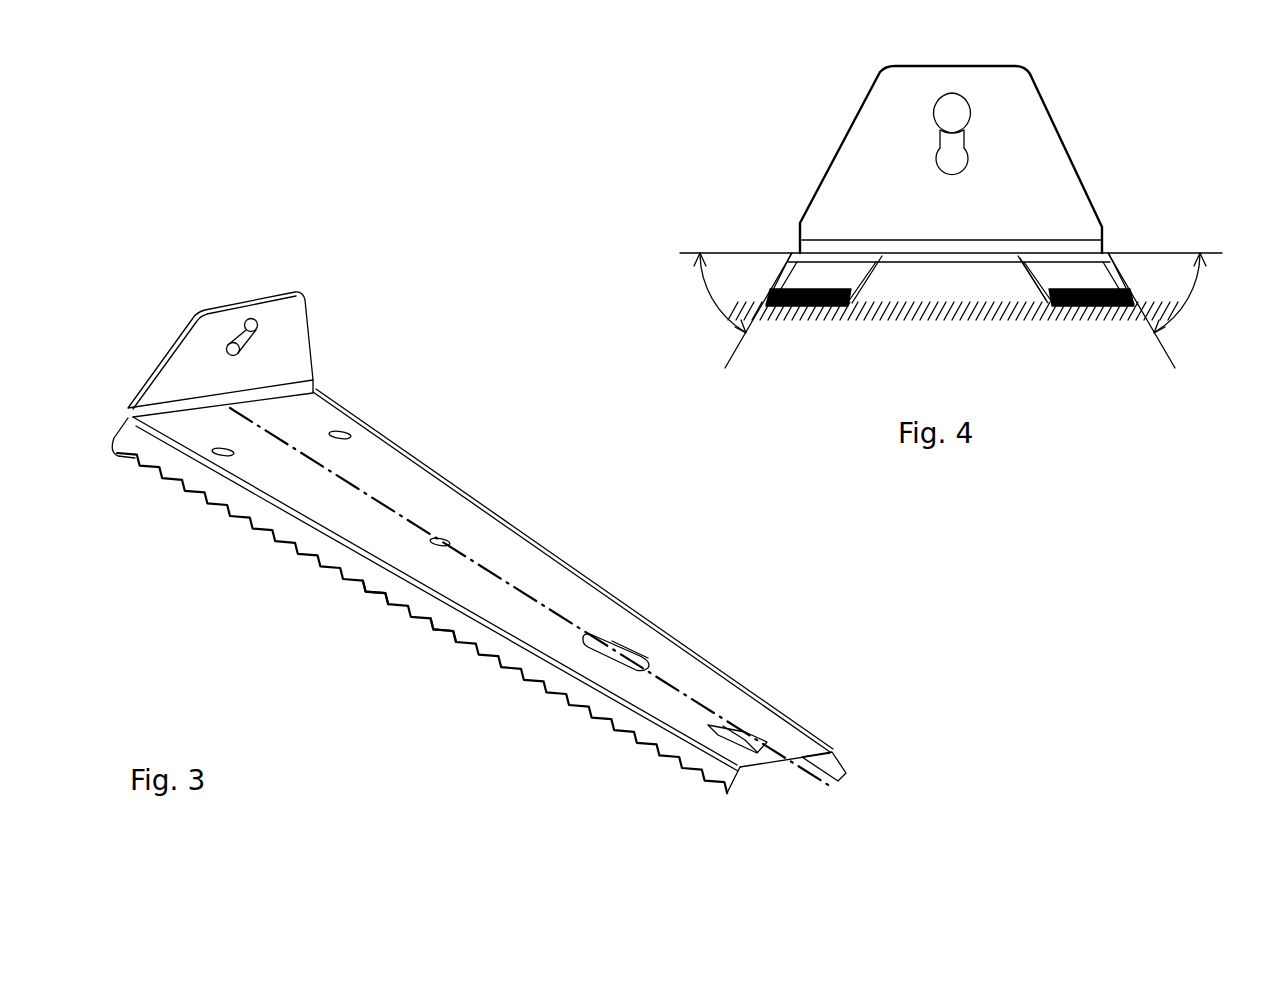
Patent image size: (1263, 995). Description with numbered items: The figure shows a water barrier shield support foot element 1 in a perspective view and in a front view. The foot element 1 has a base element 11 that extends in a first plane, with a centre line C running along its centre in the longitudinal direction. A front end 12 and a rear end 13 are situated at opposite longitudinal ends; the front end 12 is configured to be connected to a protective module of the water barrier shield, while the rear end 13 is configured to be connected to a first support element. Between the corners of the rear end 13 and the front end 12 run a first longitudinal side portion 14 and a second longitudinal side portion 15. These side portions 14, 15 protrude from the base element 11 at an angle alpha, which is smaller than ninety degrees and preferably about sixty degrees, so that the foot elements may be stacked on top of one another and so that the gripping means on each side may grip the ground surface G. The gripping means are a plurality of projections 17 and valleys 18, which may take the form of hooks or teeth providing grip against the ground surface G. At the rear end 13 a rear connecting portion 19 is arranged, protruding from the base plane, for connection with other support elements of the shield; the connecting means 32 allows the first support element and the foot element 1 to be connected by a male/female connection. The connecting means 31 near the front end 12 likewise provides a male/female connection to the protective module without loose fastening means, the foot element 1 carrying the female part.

In FIG. 3, the foot element 1 is at (365, 283).
In FIG. 4, the foot element 1 is at (640, 157).
In FIG. 3, the base element 11 is at (558, 585).
In FIG. 4, the base element 11 is at (920, 253).
In FIG. 3, the front end 12 is at (833, 757).
In FIG. 3, the rear end 13 is at (120, 432).
In FIG. 4, the first longitudinal side portion 14 is at (1040, 283).
In FIG. 3, the second longitudinal side portion 15 is at (263, 520).
In FIG. 4, the second longitudinal side portion 15 is at (845, 283).
In FIG. 3, the projections 17 is at (383, 607).
In FIG. 3, the valleys 18 is at (467, 650).
In FIG. 3, the rear connecting portion 19 is at (298, 325).
In FIG. 4, the rear connecting portion 19 is at (1020, 175).
In FIG. 3, the connecting means 31 is at (763, 737).
In FIG. 3, the connecting means 32 is at (244, 322).
In FIG. 4, the connecting means 32 is at (952, 134).
In FIG. 3, the centre line C is at (531, 623).
In FIG. 4, the ground surface G is at (1110, 318).